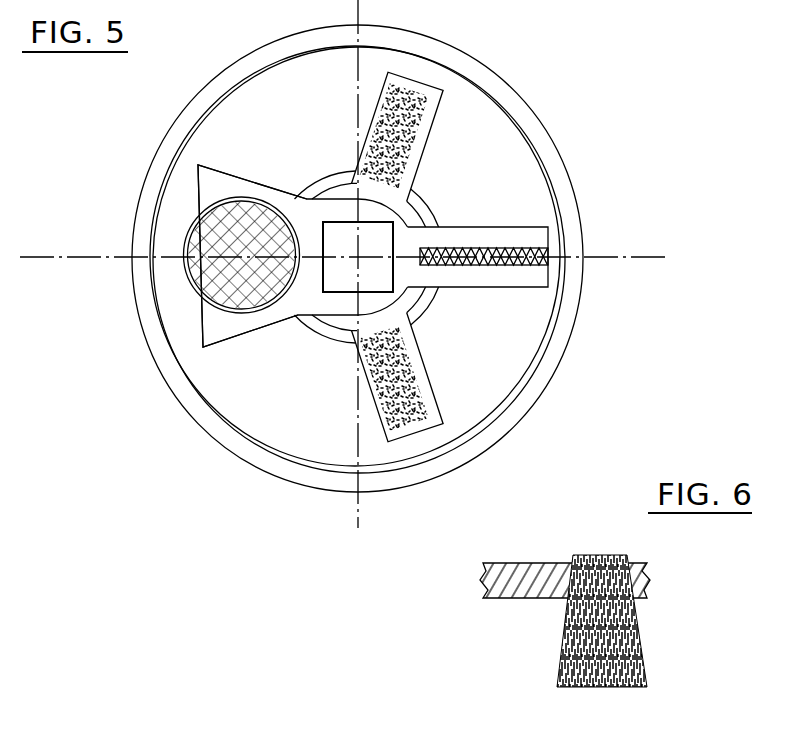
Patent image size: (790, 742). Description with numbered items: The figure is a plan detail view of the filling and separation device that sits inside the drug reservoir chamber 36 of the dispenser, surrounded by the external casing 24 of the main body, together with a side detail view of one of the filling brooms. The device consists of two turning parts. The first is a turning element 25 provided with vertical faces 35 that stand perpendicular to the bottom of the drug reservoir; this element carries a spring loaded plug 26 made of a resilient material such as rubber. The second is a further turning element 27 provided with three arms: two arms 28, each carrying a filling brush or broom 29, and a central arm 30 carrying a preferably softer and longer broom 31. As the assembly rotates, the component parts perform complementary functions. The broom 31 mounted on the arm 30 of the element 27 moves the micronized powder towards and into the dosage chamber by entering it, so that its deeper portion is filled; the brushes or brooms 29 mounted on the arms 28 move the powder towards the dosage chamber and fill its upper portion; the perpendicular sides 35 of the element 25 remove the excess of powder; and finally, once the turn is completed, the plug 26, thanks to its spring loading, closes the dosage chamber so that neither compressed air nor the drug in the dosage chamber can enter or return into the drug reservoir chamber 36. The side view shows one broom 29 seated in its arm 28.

In FIG. 5, the external casing 24 is at (265, 458).
In FIG. 5, the turning element 25 is at (212, 338).
In FIG. 5, the spring loaded plug 26 is at (215, 285).
In FIG. 5, the further turning element 27 is at (414, 209).
In FIG. 5, the arms 28 is at (437, 92).
In FIG. 6, the arms 28 is at (510, 600).
In FIG. 5, the filling brush or broom 29 is at (417, 92).
In FIG. 6, the filling brush or broom 29 is at (633, 640).
In FIG. 5, the central arm 30 is at (513, 238).
In FIG. 5, the broom 31 is at (538, 256).
In FIG. 5, the vertical face 35 is at (246, 180).
In FIG. 5, the drug reservoir chamber 36 is at (323, 442).